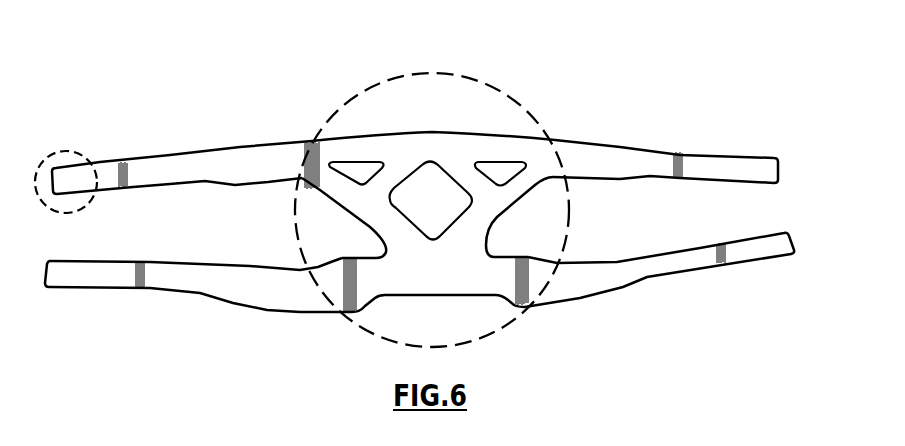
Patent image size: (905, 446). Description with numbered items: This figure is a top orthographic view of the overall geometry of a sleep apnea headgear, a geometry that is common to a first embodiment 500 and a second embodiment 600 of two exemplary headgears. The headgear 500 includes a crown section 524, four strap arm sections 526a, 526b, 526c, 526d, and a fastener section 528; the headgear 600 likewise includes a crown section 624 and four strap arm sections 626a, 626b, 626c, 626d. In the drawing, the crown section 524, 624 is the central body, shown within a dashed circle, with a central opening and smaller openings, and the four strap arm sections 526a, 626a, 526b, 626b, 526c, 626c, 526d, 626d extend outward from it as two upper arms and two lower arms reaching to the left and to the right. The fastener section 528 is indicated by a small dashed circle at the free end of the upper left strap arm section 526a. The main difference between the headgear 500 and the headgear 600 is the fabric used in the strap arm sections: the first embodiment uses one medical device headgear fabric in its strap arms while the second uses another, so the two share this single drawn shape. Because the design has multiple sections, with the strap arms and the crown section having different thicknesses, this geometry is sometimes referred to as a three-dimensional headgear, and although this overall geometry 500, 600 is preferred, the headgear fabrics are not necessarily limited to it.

The first embodiment 500 is at (414, 204).
The second embodiment 600 is at (414, 204).
The crown section 524 is at (432, 189).
The crown section 624 is at (468, 73).
The strap arm section 526a is at (182, 150).
The strap arm section 626a is at (175, 165).
The strap arm section 526b is at (198, 267).
The strap arm section 626b is at (107, 272).
The strap arm section 526c is at (665, 146).
The strap arm section 626c is at (645, 155).
The strap arm section 526d is at (659, 263).
The strap arm section 626d is at (617, 262).
The fastener section 528 is at (74, 153).